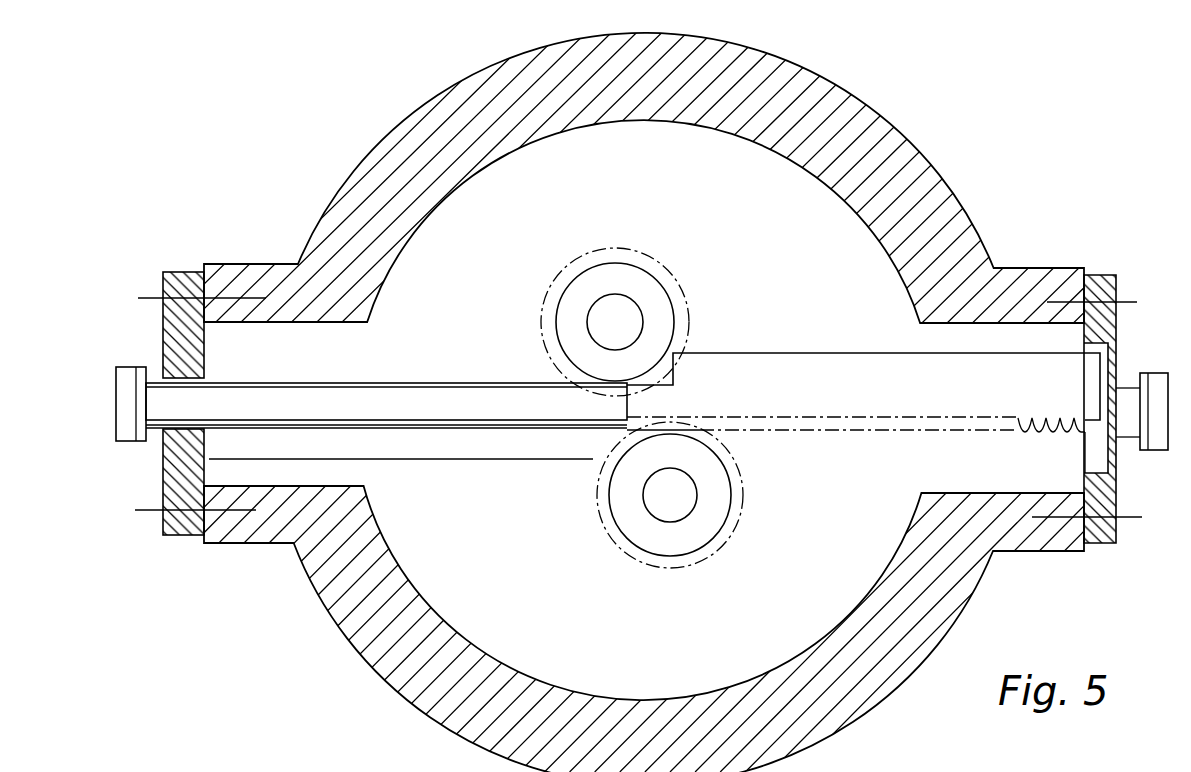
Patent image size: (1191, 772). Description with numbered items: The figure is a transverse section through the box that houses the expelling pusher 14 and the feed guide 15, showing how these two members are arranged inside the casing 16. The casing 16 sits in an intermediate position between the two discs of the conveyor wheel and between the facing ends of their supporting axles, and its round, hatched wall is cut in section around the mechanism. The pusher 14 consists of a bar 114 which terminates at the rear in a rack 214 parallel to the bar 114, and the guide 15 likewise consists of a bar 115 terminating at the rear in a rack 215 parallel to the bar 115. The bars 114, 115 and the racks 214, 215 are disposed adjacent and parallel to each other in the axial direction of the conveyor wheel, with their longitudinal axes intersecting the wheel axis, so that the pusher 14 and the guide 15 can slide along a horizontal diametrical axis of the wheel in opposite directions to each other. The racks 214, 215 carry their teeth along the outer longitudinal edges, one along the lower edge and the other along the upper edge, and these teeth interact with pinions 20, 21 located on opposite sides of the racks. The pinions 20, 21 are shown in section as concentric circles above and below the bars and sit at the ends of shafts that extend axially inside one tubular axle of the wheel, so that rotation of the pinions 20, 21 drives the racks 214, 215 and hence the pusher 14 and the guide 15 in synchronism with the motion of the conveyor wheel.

The expelling pusher 14 is at (122, 443).
The feed guide 15 is at (1158, 380).
The casing 16 is at (894, 141).
The pinion 20 is at (653, 293).
The pinion 21 is at (688, 543).
The bar 114 is at (456, 393).
The bar 115 is at (1127, 427).
The rack 214 is at (772, 420).
The rack 215 is at (469, 450).